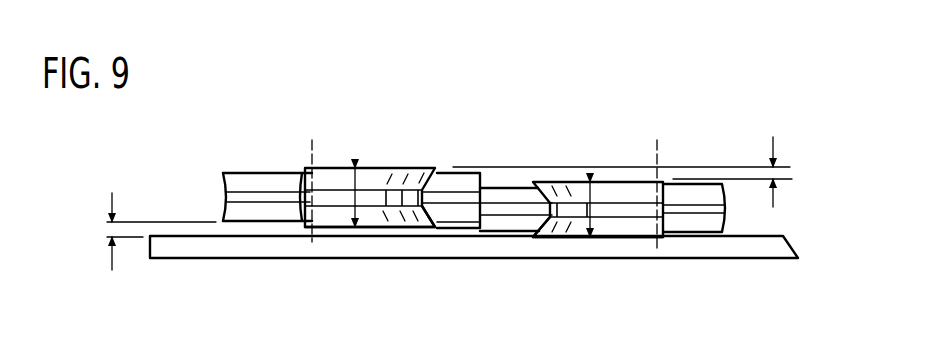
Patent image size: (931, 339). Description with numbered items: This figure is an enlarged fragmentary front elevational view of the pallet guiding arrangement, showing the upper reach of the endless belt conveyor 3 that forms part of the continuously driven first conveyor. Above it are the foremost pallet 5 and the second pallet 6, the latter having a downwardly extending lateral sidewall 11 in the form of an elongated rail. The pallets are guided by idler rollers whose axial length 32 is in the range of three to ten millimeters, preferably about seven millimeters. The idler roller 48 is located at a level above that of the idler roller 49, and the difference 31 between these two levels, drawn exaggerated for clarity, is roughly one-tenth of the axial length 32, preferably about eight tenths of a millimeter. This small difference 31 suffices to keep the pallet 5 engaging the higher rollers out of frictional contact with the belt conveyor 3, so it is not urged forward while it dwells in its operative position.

The endless belt conveyor 3 is at (685, 241).
The foremost pallet 5 is at (248, 175).
The second pallet 6 is at (512, 193).
The sidewall 11 is at (700, 208).
The difference between roller levels 31 is at (112, 232).
The axial length of idler roller 32 is at (357, 202).
The idler roller 48 is at (398, 212).
The idler roller 49 is at (618, 225).